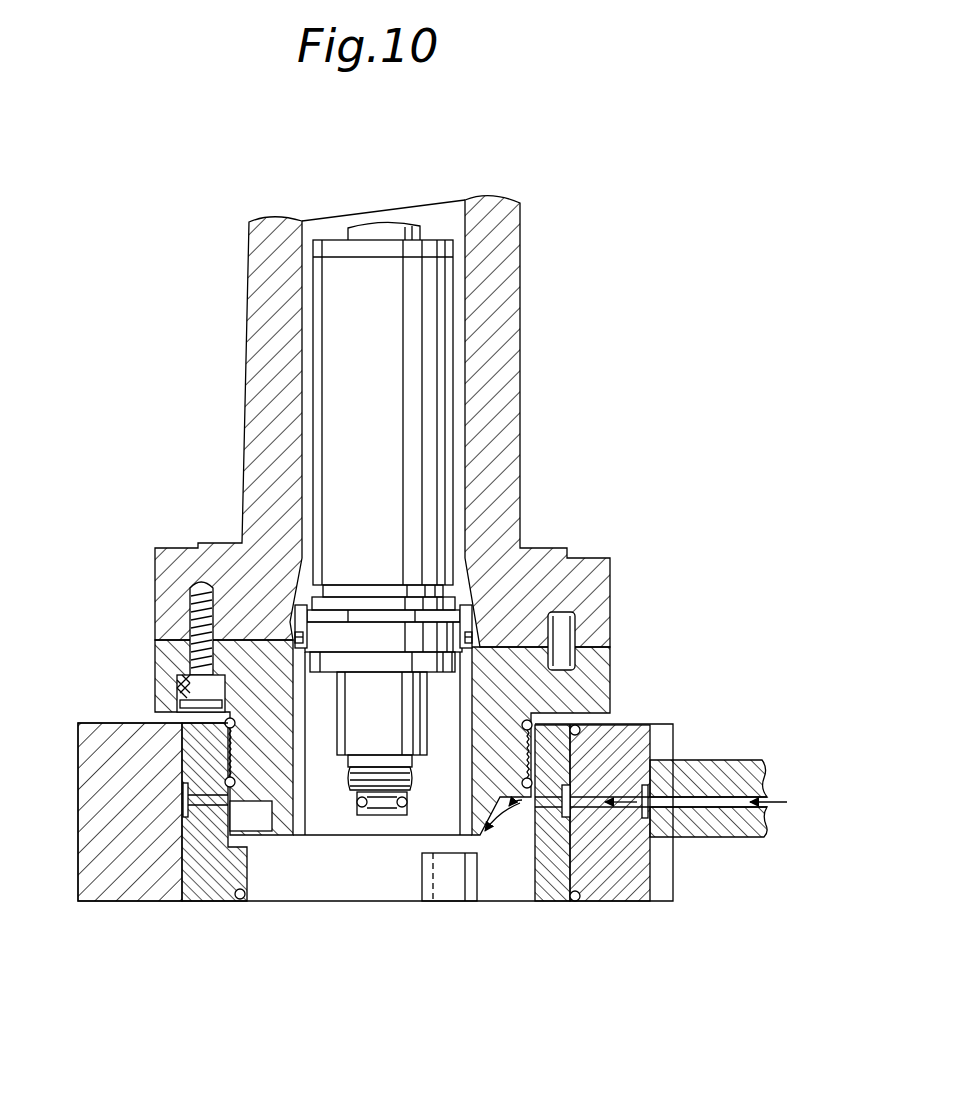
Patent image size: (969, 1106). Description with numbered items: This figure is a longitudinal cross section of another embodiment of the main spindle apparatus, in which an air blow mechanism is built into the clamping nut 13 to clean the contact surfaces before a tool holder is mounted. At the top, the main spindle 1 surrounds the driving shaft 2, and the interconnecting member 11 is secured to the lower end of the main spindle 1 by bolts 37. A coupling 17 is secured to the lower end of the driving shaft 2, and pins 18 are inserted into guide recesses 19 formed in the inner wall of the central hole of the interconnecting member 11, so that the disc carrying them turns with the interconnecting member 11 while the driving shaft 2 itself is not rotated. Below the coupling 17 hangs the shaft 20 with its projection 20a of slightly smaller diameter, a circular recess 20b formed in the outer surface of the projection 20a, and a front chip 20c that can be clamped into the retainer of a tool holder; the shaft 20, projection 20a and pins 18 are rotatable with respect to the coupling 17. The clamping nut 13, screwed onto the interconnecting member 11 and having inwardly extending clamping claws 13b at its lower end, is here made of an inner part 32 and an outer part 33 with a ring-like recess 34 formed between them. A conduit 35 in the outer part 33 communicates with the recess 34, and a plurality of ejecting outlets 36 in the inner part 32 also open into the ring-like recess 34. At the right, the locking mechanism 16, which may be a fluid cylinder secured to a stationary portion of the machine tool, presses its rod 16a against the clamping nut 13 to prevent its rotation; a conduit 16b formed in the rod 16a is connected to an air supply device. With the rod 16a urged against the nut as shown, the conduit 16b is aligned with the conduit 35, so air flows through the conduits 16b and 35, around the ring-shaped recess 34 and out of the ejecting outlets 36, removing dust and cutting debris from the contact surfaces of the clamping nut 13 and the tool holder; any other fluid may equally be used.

The main spindle 1 is at (527, 245).
The driving shaft 2 is at (433, 213).
The interconnecting member 11 is at (620, 658).
The clamping nut 13 is at (617, 906).
The clamping claws 13b is at (452, 890).
The locking mechanism 16 is at (740, 800).
The rod 16a is at (715, 838).
The conduit 16b is at (720, 805).
The coupling 17 is at (392, 352).
The pins 18 is at (288, 607).
The guide recesses 19 is at (301, 673).
The shaft 20 is at (355, 717).
The projection 20a is at (365, 758).
The circular recess 20b is at (377, 775).
The front chip 20c is at (382, 808).
The inner part 32 is at (210, 767).
The outer part 33 is at (117, 878).
The ring-like recess 34 is at (566, 800).
The conduit 35 is at (590, 803).
The ejecting outlets 36 is at (202, 800).
The bolts 37 is at (195, 603).